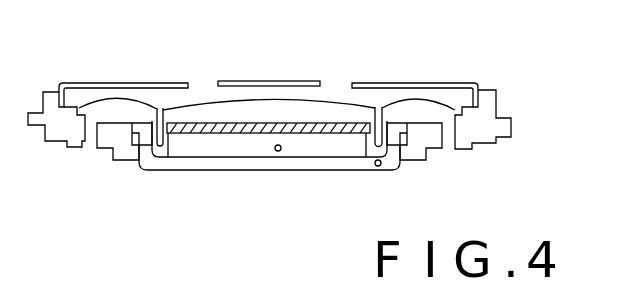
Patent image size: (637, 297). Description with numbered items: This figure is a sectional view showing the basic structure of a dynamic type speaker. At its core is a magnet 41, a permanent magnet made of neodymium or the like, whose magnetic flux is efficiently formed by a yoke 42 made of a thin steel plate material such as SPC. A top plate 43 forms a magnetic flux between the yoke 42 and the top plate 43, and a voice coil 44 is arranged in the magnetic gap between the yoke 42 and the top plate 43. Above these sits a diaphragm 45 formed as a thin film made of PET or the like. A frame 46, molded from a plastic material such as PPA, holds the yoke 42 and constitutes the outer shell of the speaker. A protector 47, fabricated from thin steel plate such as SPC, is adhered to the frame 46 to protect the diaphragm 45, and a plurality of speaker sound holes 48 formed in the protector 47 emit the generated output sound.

The magnet 41 is at (281, 150).
The yoke 42 is at (381, 166).
The top plate 43 is at (223, 130).
The voice coil 44 is at (365, 105).
The diaphragm 45 is at (422, 97).
The frame 46 is at (503, 113).
The protector 47 is at (258, 79).
The speaker sound holes 48 is at (203, 83).